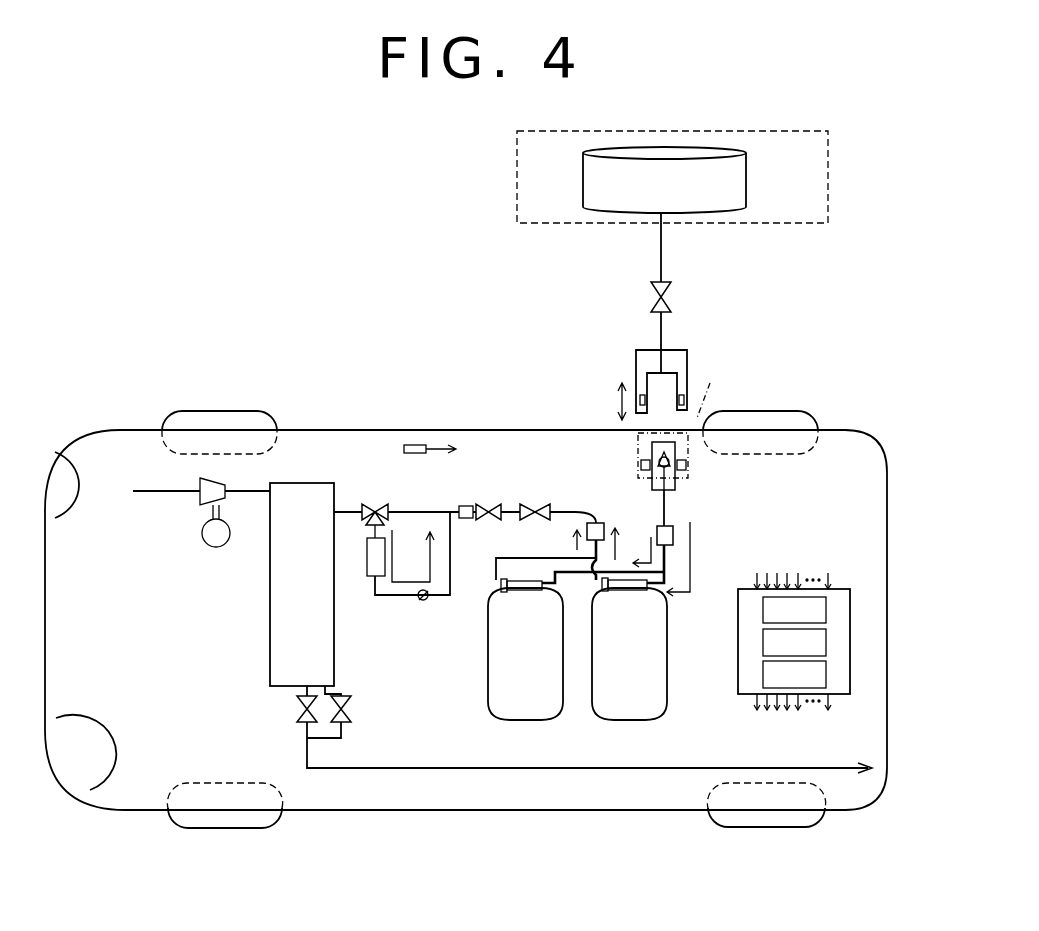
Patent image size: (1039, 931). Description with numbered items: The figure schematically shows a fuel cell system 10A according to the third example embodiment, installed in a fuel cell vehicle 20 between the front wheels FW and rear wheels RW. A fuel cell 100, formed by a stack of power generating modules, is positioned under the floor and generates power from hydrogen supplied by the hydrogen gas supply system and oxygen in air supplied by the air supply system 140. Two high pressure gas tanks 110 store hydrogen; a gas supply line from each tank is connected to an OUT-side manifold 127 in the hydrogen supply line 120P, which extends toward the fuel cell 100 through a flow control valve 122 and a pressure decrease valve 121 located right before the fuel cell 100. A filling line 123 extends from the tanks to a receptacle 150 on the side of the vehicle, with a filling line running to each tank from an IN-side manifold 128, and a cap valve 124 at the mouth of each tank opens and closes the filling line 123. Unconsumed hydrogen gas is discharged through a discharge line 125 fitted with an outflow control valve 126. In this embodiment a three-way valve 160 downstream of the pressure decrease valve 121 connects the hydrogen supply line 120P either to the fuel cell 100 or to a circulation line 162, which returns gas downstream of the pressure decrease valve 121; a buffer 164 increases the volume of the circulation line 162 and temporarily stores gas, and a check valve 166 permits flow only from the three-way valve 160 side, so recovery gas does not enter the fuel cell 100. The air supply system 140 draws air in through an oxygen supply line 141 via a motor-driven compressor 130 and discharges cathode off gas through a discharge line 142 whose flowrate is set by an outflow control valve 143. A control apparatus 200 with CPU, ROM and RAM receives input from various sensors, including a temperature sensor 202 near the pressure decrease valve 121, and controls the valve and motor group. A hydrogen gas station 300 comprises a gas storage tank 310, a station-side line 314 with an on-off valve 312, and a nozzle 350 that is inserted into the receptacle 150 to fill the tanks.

The fuel cell system 10A is at (844, 300).
The fuel cell vehicle 20 is at (318, 429).
The front wheels FW is at (252, 410).
The rear wheels RW is at (790, 410).
The fuel cell 100 is at (328, 481).
The high pressure gas tanks 110 is at (539, 671).
The hydrogen supply line 120P is at (368, 503).
The pressure decrease valve 121 is at (478, 504).
The flow control valve 122 is at (530, 504).
The filling line 123 is at (656, 512).
The cap valve 124 is at (604, 591).
The discharge line 125 is at (343, 694).
The outflow control valve 126 is at (353, 712).
The OUT-side manifold 127 is at (590, 520).
The IN-side manifold 128 is at (676, 534).
The compressor 130 is at (222, 476).
The air supply system 140 is at (195, 514).
The oxygen supply line 141 is at (148, 487).
The discharge line 142 is at (352, 770).
The outflow control valve 143 is at (296, 712).
The receptacle 150 is at (678, 468).
The three-way valve 160 is at (380, 521).
The circulation line 162 is at (375, 590).
The buffer 164 is at (367, 558).
The check valve 166 is at (420, 599).
The control apparatus 200 is at (852, 612).
The temperature sensor 202 is at (418, 444).
The hydrogen gas station 300 is at (805, 130).
The gas storage tank 310 is at (733, 185).
The on-off valve 312 is at (649, 294).
The station-side line 314 is at (662, 262).
The nozzle 350 is at (688, 375).